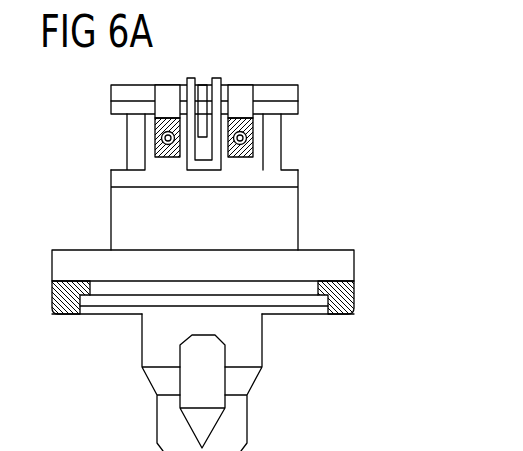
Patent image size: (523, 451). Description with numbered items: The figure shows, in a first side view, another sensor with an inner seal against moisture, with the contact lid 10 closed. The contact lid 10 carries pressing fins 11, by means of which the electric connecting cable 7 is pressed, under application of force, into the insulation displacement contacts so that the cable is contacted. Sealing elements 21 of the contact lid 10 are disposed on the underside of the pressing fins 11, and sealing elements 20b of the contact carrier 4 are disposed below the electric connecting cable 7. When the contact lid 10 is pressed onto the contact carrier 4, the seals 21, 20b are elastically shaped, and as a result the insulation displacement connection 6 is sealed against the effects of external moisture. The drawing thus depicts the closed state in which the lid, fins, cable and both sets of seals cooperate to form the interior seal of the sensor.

The contact carrier 4 is at (123, 178).
The insulation displacement connection 6 is at (137, 148).
The electric connecting cable 7 is at (272, 150).
The contact lid 10 is at (270, 93).
The pressing fins 11 is at (240, 88).
The sealing elements of the contact carrier 20b is at (172, 158).
The sealing elements of the contact lid 21 is at (157, 124).